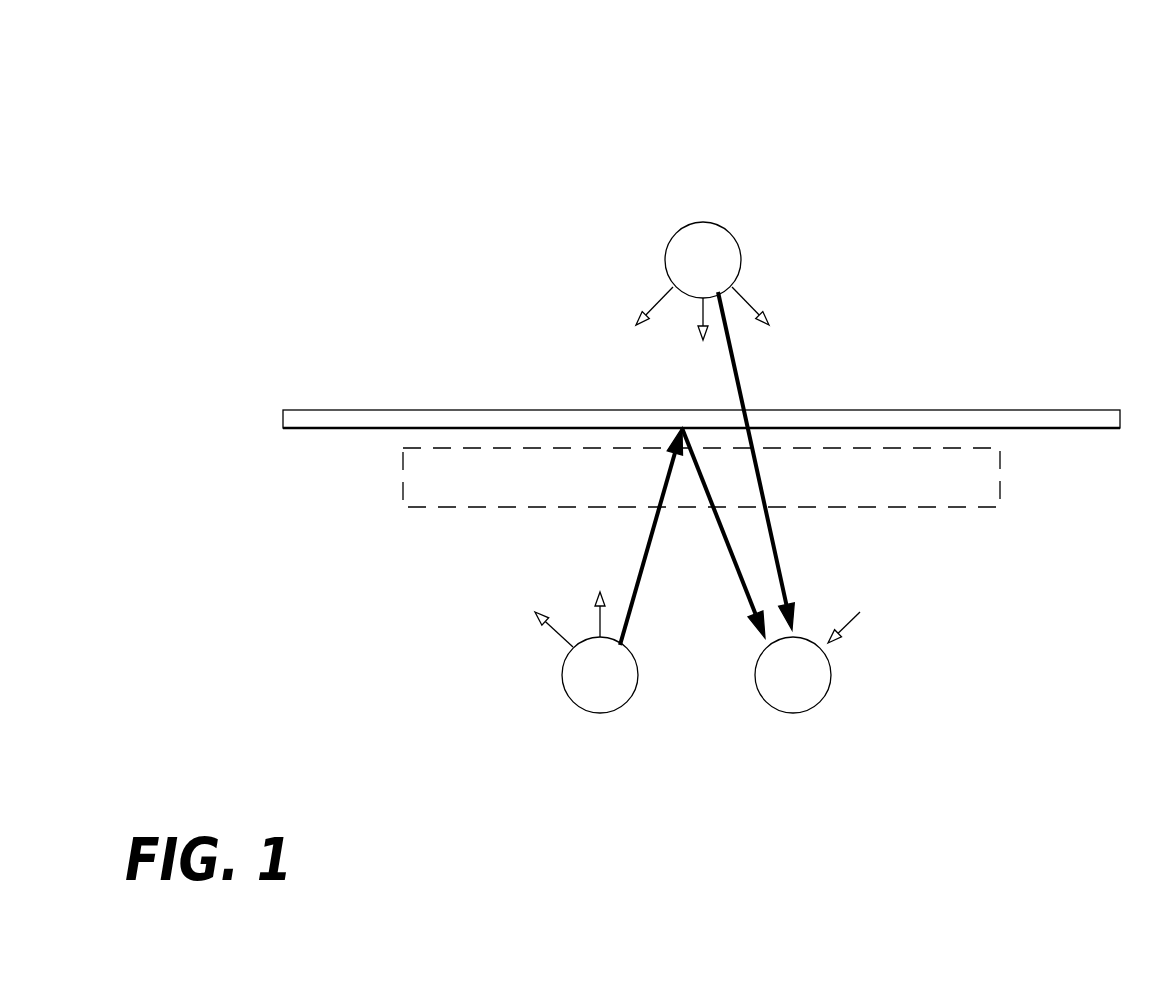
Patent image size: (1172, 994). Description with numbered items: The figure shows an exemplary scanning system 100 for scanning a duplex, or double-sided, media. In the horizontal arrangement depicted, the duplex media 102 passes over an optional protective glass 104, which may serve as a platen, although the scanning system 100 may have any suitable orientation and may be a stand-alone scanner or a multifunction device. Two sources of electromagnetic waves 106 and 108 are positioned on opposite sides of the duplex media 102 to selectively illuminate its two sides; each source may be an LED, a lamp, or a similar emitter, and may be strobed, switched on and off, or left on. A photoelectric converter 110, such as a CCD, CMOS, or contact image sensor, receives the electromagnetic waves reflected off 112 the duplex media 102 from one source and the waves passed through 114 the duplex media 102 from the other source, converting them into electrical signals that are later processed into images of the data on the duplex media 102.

The scanning system 100 is at (1035, 122).
The duplex media 102 is at (701, 373).
The protective glass 104 is at (753, 524).
The source of electromagnetic waves 106 is at (663, 694).
The source of electromagnetic waves 108 is at (744, 241).
The photoelectric converter 110 is at (870, 704).
The electromagnetic waves reflected off the duplex media 112 is at (720, 535).
The electromagnetic waves passed through the duplex media 114 is at (797, 461).